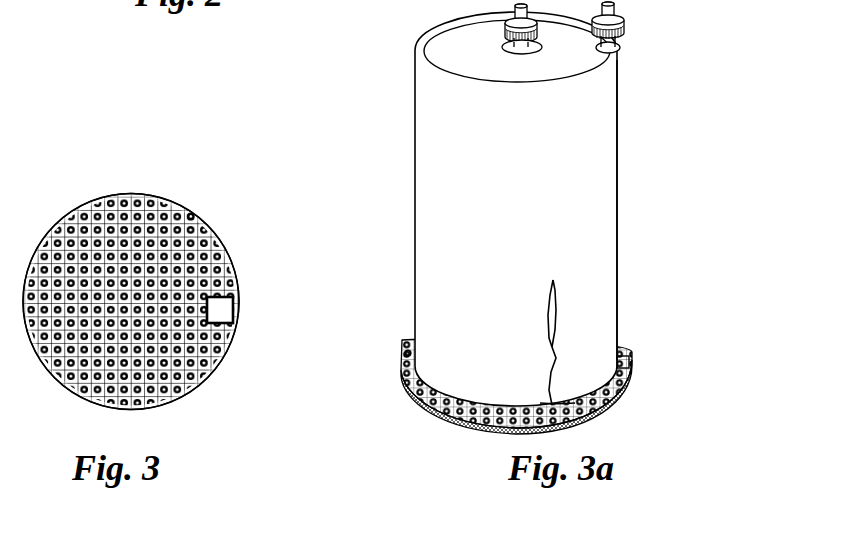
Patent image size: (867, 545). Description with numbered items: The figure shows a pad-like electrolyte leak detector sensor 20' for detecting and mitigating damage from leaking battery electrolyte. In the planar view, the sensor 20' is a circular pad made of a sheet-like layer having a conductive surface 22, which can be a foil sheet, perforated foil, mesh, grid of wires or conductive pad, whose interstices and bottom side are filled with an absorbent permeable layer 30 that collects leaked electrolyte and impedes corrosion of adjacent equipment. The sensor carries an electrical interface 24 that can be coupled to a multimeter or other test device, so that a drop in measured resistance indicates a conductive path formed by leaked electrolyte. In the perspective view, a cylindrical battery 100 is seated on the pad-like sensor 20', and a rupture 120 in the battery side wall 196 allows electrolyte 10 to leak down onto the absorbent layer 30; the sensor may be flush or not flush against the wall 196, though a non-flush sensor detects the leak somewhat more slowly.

In FIG. 3, the pad-like sensor 20' is at (133, 272).
In FIG. 3A, the pad-like sensor 20' is at (488, 410).
In FIG. 3, the absorbent permeable layer 30 is at (192, 217).
In FIG. 3A, the absorbent permeable layer 30 is at (410, 350).
In FIG. 3, the electrical interface 24 is at (233, 303).
In FIG. 3A, the electrical interface 24 is at (628, 358).
In FIG. 3A, the conductive surface 22 is at (443, 413).
In FIG. 3A, the battery 100 is at (524, 228).
In FIG. 3A, the wall 196 is at (617, 202).
In FIG. 3A, the rupture 120 is at (554, 297).
In FIG. 3A, the electrolyte 10 is at (556, 357).